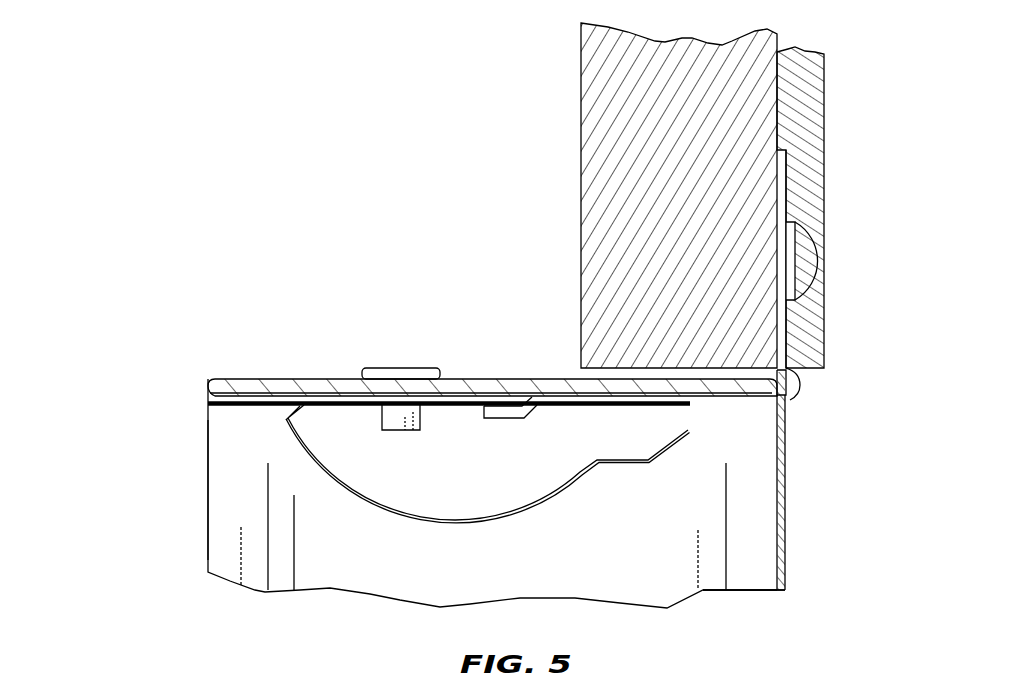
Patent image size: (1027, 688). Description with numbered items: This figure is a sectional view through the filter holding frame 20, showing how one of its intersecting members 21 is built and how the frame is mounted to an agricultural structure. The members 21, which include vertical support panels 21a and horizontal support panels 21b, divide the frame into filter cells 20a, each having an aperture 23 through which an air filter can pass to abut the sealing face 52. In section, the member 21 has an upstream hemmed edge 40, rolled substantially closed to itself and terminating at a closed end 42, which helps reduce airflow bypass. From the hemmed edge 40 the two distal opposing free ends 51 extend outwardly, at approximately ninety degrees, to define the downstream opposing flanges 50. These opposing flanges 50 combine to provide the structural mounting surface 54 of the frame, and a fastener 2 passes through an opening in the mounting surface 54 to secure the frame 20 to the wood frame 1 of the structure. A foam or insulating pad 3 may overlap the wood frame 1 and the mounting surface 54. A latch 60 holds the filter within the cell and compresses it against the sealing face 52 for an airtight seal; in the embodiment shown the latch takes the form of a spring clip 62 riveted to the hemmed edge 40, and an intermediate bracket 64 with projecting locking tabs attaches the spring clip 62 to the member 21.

The wood frame 1 is at (615, 168).
The fastener 2 is at (805, 275).
The foam or insulating pad 3 is at (808, 170).
The filter holding frame 20 is at (92, 470).
The filter cell 20a is at (174, 510).
The intersecting member 21 is at (440, 348).
The vertical support panel 21a is at (675, 560).
The horizontal support panel 21b is at (508, 380).
The aperture 23 is at (785, 570).
The upstream hemmed edge 40 is at (287, 379).
The closed end 42 is at (208, 380).
The downstream opposing flange 50 is at (790, 210).
The distal opposing free end 51 is at (782, 140).
The sealing face 52 is at (770, 447).
The mounting surface 54 is at (792, 373).
The latch 60 is at (358, 550).
The spring clip 62 is at (465, 520).
The intermediate bracket 64 is at (208, 398).